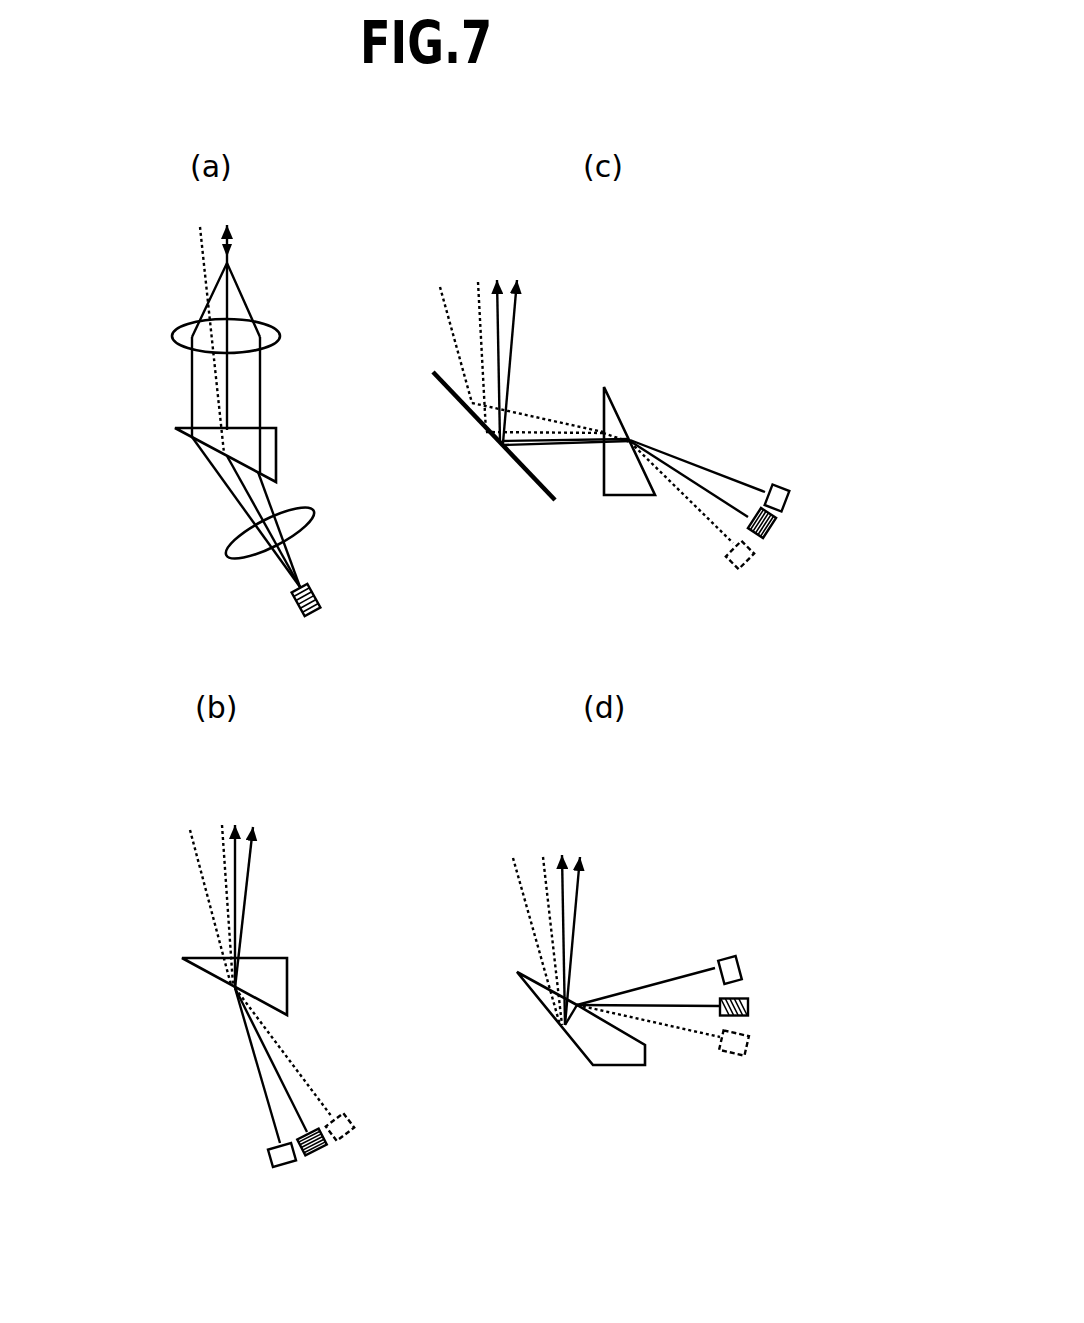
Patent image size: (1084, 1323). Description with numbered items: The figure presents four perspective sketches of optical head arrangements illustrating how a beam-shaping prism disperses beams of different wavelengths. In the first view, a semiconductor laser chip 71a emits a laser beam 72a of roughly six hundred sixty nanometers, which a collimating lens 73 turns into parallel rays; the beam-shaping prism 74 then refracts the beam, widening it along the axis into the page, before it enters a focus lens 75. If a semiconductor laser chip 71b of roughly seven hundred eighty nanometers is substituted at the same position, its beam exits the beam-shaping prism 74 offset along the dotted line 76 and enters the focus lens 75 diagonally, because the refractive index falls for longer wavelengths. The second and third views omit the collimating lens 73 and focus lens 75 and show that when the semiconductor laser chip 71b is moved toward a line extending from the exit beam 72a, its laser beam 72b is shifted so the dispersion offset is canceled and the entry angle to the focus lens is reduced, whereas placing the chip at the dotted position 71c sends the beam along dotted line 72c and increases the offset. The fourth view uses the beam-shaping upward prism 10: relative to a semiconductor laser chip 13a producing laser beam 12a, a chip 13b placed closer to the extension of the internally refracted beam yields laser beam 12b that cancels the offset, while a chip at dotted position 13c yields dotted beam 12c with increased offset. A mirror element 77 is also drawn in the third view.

The beam-shaping upward prism 10 is at (615, 1067).
The laser beam 12a is at (565, 870).
The laser beam 12b is at (578, 912).
The dotted line laser beam 12c is at (528, 913).
The semiconductor laser chip 13a is at (750, 1008).
The semiconductor laser chip 13b is at (745, 962).
The semiconductor laser chip position 13c is at (748, 1055).
The semiconductor laser chip 71a is at (320, 597).
The semiconductor laser chip 71b is at (305, 1220).
The semiconductor laser chip position 71c is at (733, 565).
The laser beam 72a is at (230, 298).
The laser beam 72b is at (517, 333).
The dotted line laser beam 72c is at (445, 328).
The collimating lens 73 is at (312, 507).
The beam-shaping prism 74 is at (276, 442).
The focus lens 75 is at (174, 343).
The dotted line 76 is at (206, 283).
The mirror 77 is at (525, 473).